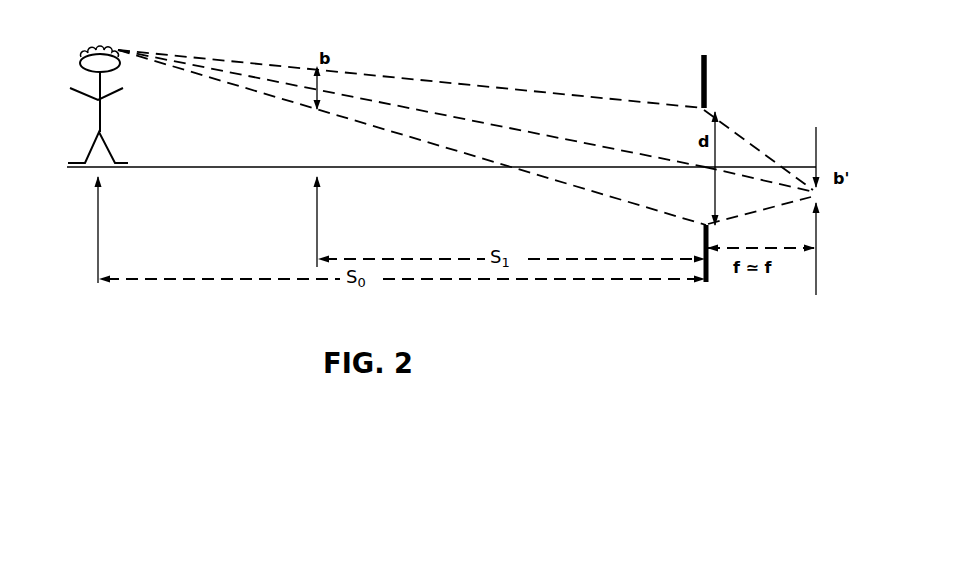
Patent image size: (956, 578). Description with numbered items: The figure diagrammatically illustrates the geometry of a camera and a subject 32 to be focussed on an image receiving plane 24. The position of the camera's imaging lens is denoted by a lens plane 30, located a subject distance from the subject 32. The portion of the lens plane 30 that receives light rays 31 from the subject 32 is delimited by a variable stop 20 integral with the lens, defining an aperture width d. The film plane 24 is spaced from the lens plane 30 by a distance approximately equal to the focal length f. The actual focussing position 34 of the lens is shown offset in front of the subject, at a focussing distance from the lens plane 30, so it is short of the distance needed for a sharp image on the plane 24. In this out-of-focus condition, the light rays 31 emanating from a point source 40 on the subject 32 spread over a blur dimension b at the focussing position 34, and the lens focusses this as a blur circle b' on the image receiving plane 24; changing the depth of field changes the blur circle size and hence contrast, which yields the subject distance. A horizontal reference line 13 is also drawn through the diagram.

The optical axis 13 is at (226, 167).
The variable stop 20 is at (701, 73).
The image receiving plane 24 is at (819, 264).
The lens plane 30 is at (706, 57).
The light rays 31 is at (449, 97).
The subject 32 is at (96, 221).
The focussing position 34 is at (315, 216).
The point source 40 is at (104, 48).